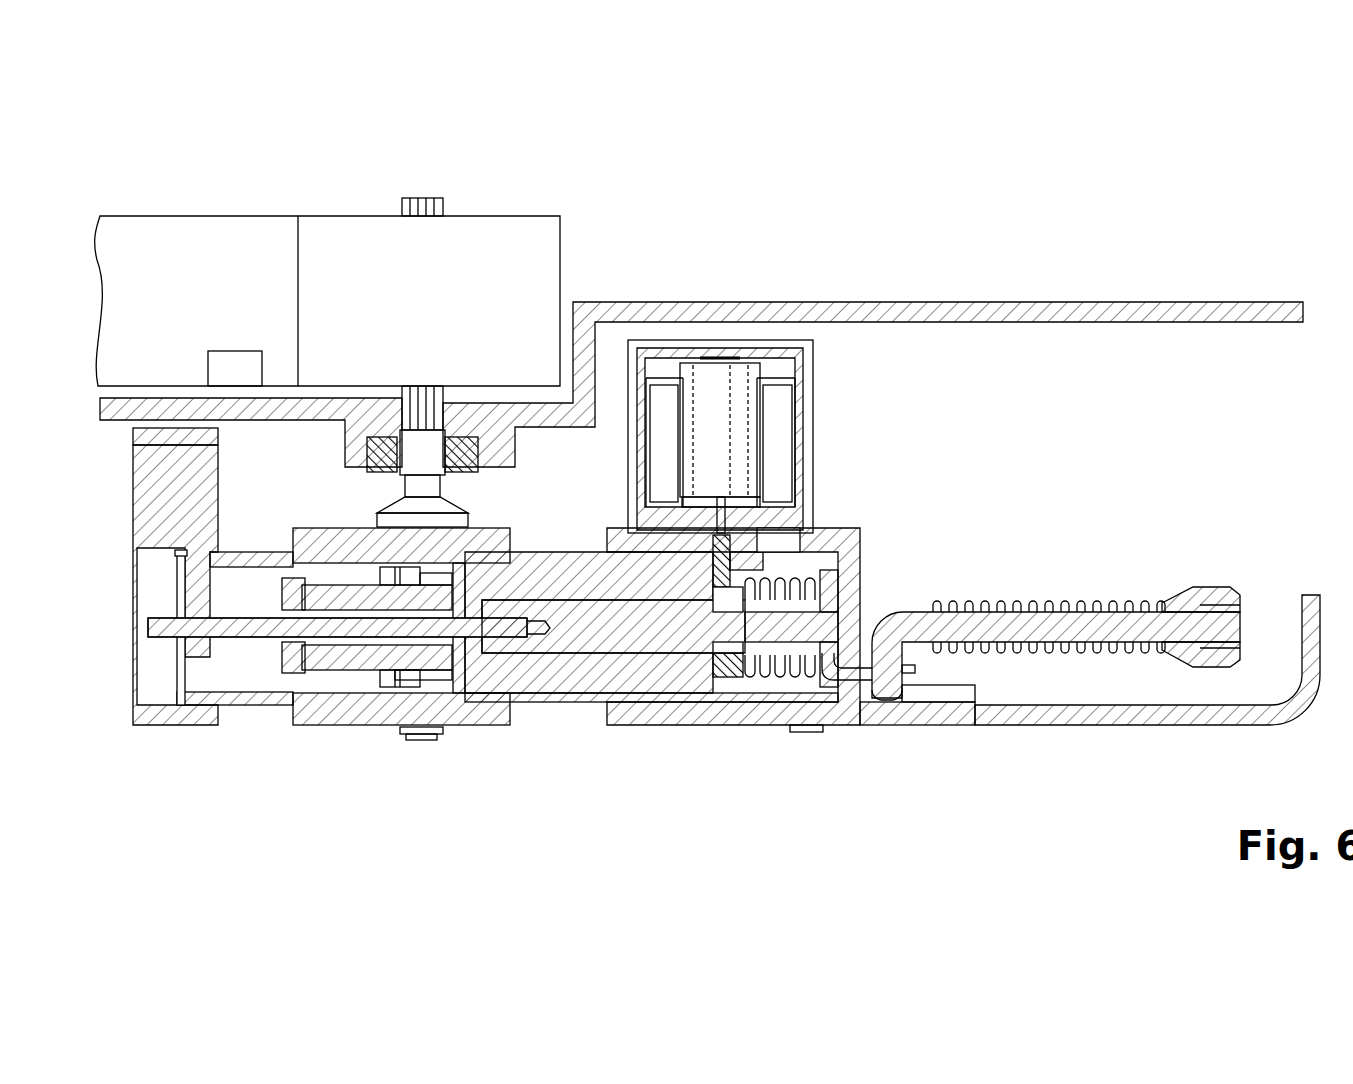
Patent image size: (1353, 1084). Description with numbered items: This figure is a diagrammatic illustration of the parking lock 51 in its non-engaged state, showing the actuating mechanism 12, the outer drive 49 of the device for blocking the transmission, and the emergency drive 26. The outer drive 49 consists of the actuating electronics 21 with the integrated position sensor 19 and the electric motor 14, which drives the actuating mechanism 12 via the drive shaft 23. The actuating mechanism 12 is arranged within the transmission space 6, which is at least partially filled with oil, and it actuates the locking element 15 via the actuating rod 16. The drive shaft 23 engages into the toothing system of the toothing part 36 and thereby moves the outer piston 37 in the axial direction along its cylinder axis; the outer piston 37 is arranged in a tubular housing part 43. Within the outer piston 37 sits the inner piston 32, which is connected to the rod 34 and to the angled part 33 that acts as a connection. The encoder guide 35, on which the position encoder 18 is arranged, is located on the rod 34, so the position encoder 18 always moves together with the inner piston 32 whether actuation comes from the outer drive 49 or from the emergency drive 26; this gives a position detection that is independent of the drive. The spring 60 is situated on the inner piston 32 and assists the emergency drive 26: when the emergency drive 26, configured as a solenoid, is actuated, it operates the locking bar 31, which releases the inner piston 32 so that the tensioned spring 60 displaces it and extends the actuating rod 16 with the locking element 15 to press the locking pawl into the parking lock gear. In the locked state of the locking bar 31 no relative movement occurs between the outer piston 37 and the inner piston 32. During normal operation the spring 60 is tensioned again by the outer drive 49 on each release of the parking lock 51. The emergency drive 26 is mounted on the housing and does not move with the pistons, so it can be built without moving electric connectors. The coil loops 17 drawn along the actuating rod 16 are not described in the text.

The outer drive 49 is at (303, 255).
The actuating electronics 21 is at (195, 230).
The electric motor 14 is at (330, 232).
The position sensor 19 is at (233, 362).
The parking lock 51 is at (1274, 219).
The position encoder 18 is at (133, 438).
The transmission space 6 is at (296, 496).
The drive shaft 23 is at (415, 470).
The encoder guide 35 is at (195, 585).
The rod 34 is at (345, 625).
The toothing part 36 is at (386, 657).
The tubular housing part 43 is at (537, 696).
The outer piston 37 is at (572, 667).
The inner piston 32 is at (655, 625).
The locking bar 31 is at (720, 657).
The spring 60 is at (777, 665).
The angled part 33 is at (827, 600).
The actuating mechanism 12 is at (901, 475).
The emergency drive 26 is at (813, 353).
The actuating rod 16 is at (1115, 620).
The spring coil 17 is at (1058, 608).
The locking element 15 is at (1205, 590).